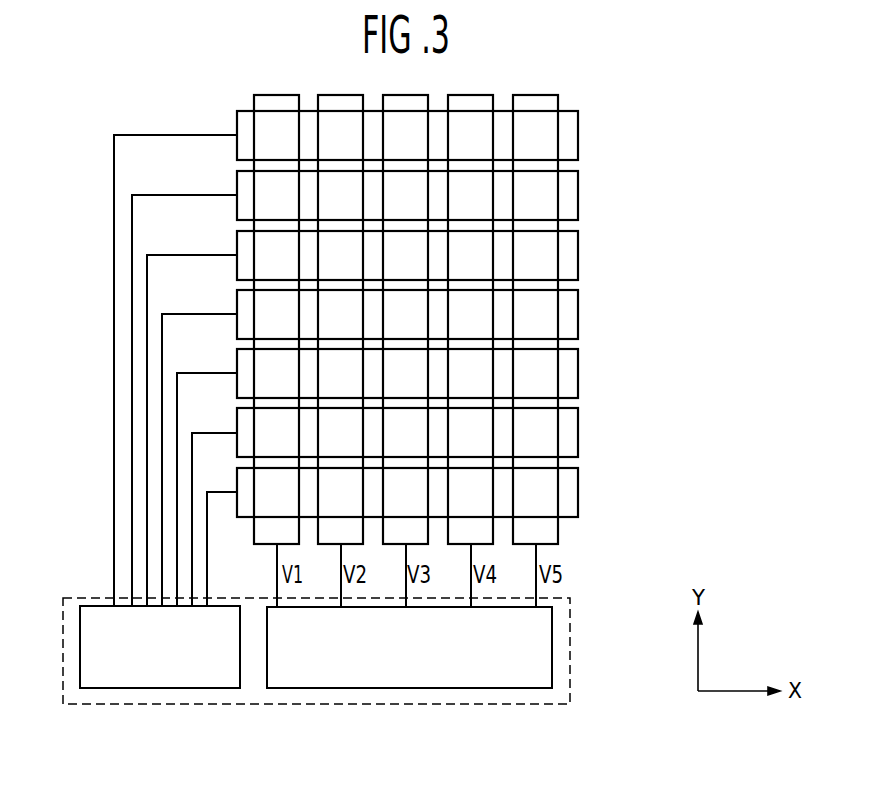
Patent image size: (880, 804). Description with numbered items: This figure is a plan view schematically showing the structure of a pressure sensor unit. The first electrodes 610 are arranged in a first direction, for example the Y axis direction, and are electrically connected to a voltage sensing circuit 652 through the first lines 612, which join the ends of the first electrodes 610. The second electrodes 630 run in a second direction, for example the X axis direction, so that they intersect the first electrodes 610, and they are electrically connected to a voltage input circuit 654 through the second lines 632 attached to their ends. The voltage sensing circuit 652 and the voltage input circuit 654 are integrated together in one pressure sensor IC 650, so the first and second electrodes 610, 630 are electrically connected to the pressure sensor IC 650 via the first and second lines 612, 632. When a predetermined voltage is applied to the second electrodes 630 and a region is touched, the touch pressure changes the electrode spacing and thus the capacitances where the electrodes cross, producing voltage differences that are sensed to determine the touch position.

The first electrodes 610 is at (283, 95).
The second electrodes 630 is at (578, 493).
The second lines 632 is at (113, 545).
The first lines 612 is at (277, 556).
The pressure sensor IC 650 is at (570, 657).
The voltage sensing circuit 652 is at (415, 690).
The voltage input circuit 654 is at (165, 690).